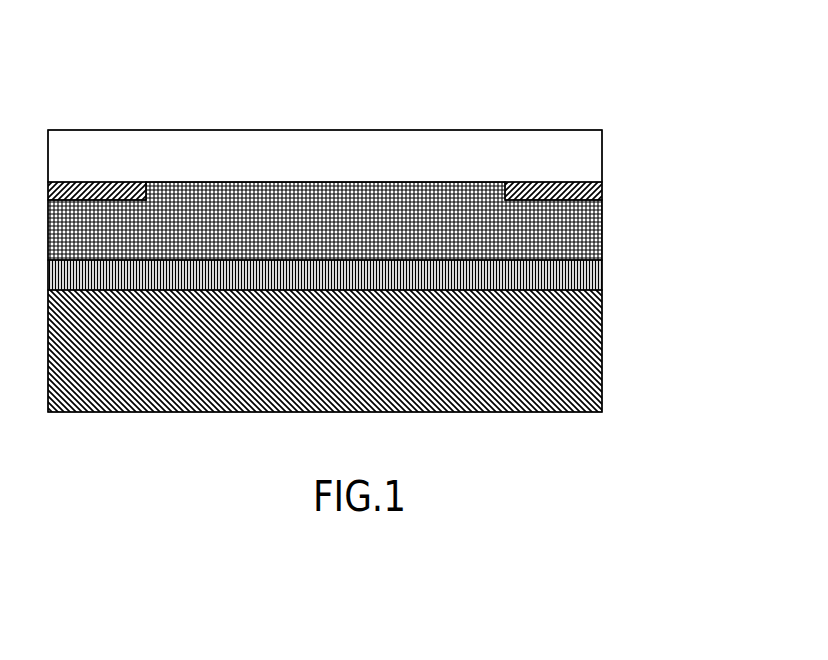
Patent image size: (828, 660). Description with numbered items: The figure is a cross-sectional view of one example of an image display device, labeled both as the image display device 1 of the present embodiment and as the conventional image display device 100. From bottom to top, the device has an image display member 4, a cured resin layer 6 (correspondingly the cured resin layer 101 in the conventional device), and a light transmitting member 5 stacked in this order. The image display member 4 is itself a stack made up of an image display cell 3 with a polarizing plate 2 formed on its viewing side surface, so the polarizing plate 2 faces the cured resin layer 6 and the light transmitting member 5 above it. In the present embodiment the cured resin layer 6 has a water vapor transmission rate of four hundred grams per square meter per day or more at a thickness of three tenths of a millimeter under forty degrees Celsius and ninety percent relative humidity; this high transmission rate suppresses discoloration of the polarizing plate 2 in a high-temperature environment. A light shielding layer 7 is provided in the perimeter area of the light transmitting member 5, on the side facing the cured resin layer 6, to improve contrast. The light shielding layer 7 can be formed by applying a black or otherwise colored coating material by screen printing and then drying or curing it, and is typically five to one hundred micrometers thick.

The image display device 1 is at (421, 212).
The image display device 100 is at (148, 33).
The polarizing plate 2 is at (606, 278).
The image display cell 3 is at (378, 351).
The image display member 4 is at (421, 332).
The light transmitting member 5 is at (603, 147).
The cured resin layer 6 is at (406, 221).
The cured resin layer 101 is at (603, 230).
The light shielding layer 7 is at (603, 190).